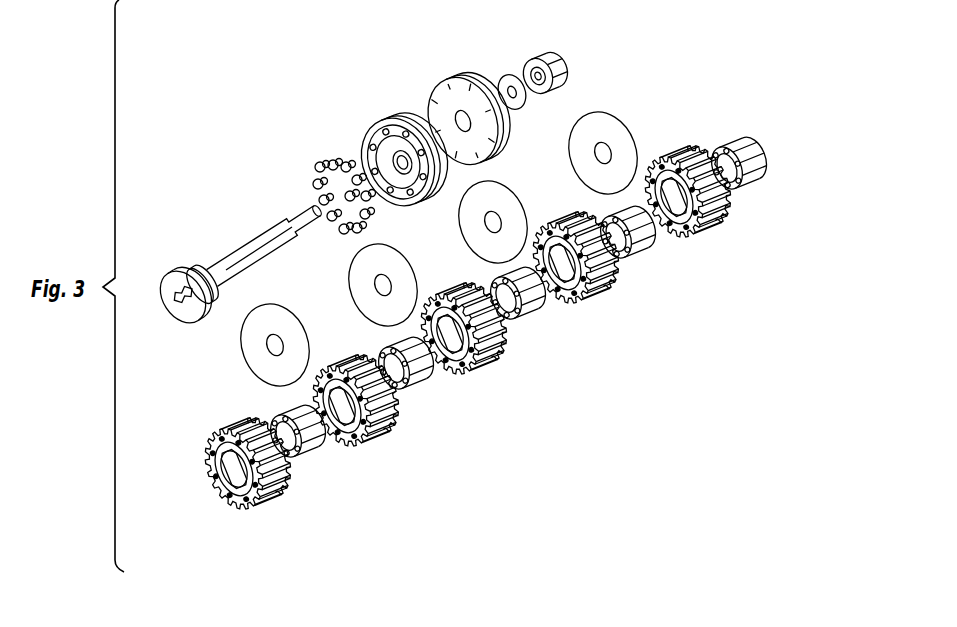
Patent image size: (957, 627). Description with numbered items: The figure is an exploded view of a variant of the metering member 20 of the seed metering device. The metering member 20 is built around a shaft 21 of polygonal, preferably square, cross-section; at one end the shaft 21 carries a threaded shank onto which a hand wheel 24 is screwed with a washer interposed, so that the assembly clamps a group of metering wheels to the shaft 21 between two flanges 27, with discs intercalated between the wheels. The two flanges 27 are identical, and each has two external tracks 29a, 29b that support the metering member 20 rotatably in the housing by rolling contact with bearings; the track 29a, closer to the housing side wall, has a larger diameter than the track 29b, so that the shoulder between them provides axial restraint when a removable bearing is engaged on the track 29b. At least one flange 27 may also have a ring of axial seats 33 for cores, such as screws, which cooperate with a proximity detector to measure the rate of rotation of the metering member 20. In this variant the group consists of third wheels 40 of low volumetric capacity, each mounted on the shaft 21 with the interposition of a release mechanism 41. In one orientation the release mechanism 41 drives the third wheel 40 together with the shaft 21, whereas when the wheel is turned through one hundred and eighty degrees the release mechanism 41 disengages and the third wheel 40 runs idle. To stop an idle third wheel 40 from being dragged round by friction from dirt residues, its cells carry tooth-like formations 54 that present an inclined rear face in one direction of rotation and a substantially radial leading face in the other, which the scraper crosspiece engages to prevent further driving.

The metering member 20 is at (714, 72).
The shaft 21 is at (249, 250).
The hand wheel 24 is at (566, 68).
The flange 27 is at (467, 70).
The external track 29a is at (405, 118).
The external track 29b is at (394, 118).
The axial seats 33 is at (370, 148).
The third wheel 40 is at (494, 340).
The release mechanism 41 is at (765, 162).
The tooth-like formation 54 is at (725, 205).